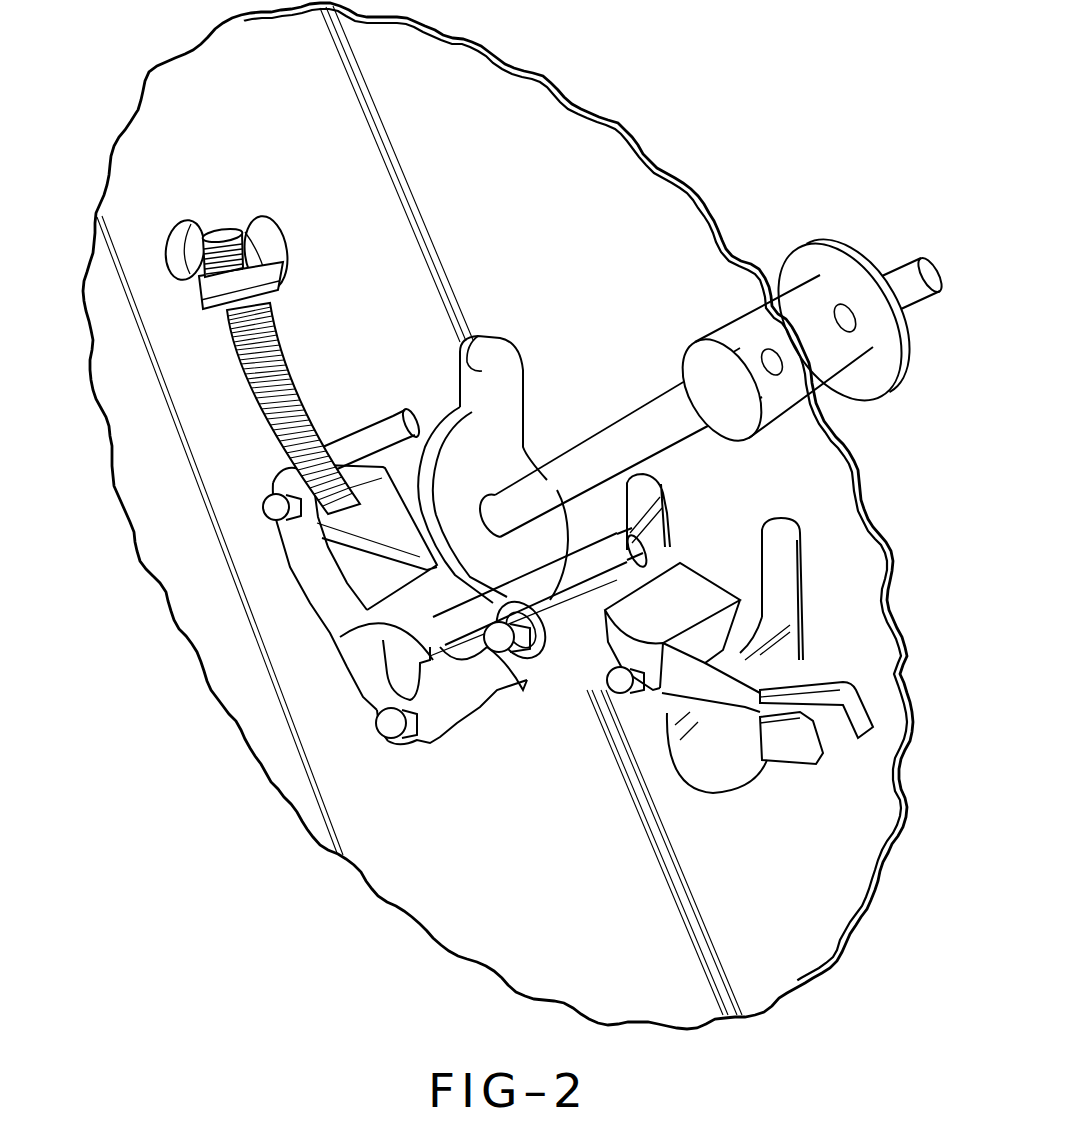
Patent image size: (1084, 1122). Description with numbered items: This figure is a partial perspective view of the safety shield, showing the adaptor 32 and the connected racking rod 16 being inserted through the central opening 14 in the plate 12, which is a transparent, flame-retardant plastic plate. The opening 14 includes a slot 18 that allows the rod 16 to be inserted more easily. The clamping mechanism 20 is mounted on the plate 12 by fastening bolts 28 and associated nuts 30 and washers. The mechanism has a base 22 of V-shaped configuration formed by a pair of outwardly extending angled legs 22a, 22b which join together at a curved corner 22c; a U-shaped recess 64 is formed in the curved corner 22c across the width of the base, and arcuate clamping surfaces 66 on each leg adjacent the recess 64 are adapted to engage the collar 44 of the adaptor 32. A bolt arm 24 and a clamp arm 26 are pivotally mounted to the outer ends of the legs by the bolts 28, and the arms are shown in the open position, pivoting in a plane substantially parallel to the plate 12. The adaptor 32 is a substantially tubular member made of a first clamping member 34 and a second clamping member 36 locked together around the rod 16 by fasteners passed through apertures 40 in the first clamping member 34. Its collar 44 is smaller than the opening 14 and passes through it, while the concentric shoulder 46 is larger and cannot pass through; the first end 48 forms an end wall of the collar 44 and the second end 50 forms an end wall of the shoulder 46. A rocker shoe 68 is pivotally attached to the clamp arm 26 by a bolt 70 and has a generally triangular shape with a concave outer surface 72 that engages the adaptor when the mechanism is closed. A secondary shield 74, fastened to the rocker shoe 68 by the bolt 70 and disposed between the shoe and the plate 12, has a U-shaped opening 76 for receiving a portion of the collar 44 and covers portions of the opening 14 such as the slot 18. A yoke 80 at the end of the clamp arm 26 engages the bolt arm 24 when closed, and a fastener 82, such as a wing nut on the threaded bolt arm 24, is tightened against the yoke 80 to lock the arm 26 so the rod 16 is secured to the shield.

The plate 12 is at (493, 52).
The central opening 14 is at (432, 526).
The racking rod 16 is at (508, 490).
The slot 18 is at (477, 336).
The clamping mechanism 20 is at (453, 747).
The base 22 is at (427, 747).
The angled leg 22a is at (321, 590).
The angled leg 22b is at (477, 692).
The curved corner 22c is at (372, 692).
The bolt arm 24 is at (296, 352).
The clamp arm 26 is at (708, 733).
The fastening bolts 28 is at (262, 508).
The nuts 30 is at (410, 428).
The adaptor 32 is at (827, 240).
The first clamping member 34 is at (790, 251).
The second clamping member 36 is at (875, 398).
The apertures 40 is at (838, 314).
The collar 44 is at (718, 327).
The shoulder 46 is at (844, 259).
The first end 48 is at (692, 354).
The second end 50 is at (903, 368).
The U-shaped recess 64 is at (400, 669).
The arcuate clamping surfaces 66 is at (440, 584).
The rocker shoe 68 is at (620, 640).
The bolt 70 is at (618, 688).
The concave outer surface 72 is at (677, 598).
The secondary shield 74 is at (783, 580).
The U-shaped opening 76 is at (760, 548).
The yoke 80 is at (790, 748).
The fastener 82 is at (257, 237).